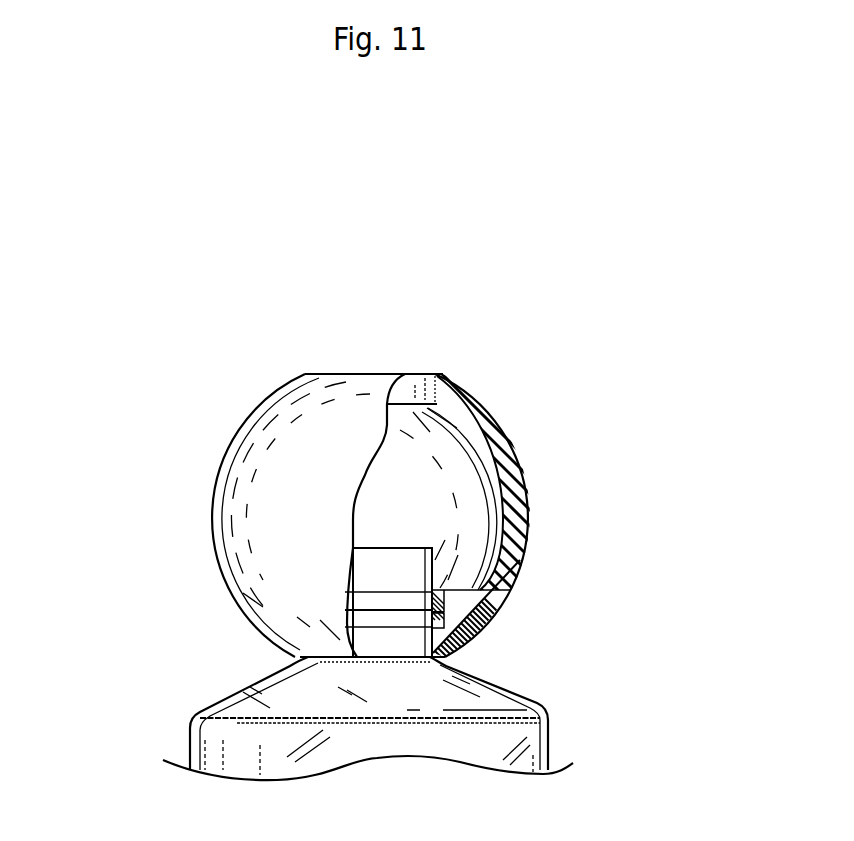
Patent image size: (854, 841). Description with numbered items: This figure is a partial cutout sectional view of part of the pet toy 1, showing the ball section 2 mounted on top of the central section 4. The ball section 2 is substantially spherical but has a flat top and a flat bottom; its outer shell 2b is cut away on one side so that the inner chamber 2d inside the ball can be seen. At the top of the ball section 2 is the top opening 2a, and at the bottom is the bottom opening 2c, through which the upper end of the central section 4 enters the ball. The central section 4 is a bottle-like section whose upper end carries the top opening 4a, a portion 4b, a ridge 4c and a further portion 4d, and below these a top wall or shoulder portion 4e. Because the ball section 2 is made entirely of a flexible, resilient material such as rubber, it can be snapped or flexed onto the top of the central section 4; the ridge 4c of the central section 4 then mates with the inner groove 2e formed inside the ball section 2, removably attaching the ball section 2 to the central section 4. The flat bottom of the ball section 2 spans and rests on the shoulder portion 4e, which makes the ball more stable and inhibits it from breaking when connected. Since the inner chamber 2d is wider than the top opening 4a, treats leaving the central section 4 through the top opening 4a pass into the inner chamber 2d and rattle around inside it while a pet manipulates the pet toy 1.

The pet toy 1 is at (526, 175).
The ball section 2 is at (200, 482).
The top opening 2a is at (409, 388).
The shell 2b is at (520, 520).
The bottom opening 2c is at (400, 658).
The inner chamber 2d is at (433, 470).
The inner groove 2e is at (440, 619).
The central section 4 is at (184, 739).
The top opening 4a is at (368, 547).
The portion 4b is at (388, 568).
The ridge 4c is at (370, 617).
The portion 4d is at (363, 640).
The shoulder portion 4e is at (253, 683).